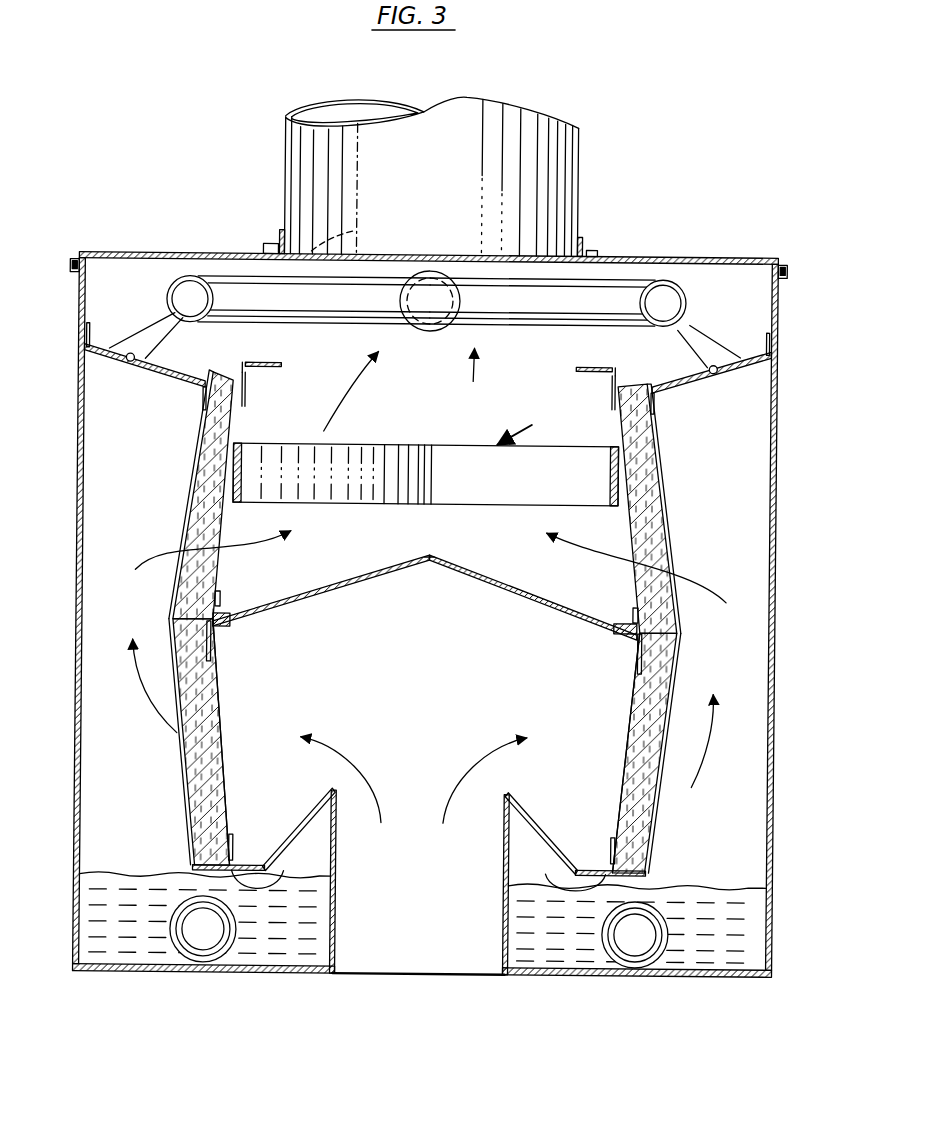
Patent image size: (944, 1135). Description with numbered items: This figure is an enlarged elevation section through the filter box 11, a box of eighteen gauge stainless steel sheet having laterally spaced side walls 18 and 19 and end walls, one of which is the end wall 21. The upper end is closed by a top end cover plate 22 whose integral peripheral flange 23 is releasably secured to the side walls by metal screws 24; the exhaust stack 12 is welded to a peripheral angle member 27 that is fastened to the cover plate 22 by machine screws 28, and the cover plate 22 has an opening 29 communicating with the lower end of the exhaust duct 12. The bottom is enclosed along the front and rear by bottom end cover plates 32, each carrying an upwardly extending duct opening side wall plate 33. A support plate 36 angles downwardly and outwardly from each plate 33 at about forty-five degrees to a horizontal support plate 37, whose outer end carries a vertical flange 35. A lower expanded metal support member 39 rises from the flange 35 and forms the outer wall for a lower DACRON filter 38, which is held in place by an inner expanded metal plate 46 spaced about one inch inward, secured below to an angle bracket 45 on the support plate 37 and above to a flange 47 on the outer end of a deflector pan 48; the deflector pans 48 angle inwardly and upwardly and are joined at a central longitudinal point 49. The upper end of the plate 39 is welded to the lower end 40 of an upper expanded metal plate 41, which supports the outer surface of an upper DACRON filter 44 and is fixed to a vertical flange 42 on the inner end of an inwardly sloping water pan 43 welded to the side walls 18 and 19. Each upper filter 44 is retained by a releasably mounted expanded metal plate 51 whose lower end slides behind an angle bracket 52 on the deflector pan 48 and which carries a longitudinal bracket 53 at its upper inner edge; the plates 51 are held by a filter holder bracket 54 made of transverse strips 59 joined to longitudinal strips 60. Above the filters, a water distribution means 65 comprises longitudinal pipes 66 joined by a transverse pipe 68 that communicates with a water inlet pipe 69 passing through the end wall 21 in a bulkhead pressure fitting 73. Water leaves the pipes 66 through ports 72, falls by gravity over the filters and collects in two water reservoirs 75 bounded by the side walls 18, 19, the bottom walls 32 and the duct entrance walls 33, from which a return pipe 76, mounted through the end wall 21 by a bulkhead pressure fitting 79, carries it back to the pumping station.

The filter box 11 is at (428, 602).
The exhaust stack 12 is at (540, 138).
The side wall 18 is at (772, 609).
The side wall 19 is at (78, 486).
The end wall 21 is at (428, 968).
The top end cover plate 22 is at (668, 258).
The integral peripheral flange 23 is at (70, 262).
The metal screws 24 is at (67, 276).
The peripheral angle member 27 is at (277, 234).
The machine screws 28 is at (260, 248).
The opening 29 is at (356, 232).
The bottom end cover plates 32 is at (298, 976).
The duct opening side wall plate 33 is at (340, 900).
The vertical longitudinal flange 35 is at (198, 866).
The support plate 36 is at (318, 810).
The horizontal support plate 37 is at (258, 892).
The lower filter 38 is at (220, 762).
The lower expanded metal support member 39 is at (190, 774).
The lower end of upper expanded metal plate 40 is at (176, 630).
The upper expanded metal plate 41 is at (198, 482).
The vertical flange 42 is at (204, 394).
The inwardly sloping water pan 43 is at (132, 366).
The upper filter 44 is at (192, 520).
The angle bracket 45 is at (236, 846).
The inner expanded metal plate 46 is at (216, 714).
The flange 47 is at (216, 652).
The deflector pan 48 is at (328, 594).
The central longitudinal point 49 is at (432, 556).
The releasably mounted expanded metal plate 51 is at (224, 524).
The angle bracket 52 is at (222, 612).
The longitudinal bracket 53 is at (252, 380).
The filter holder bracket 54 is at (532, 429).
The transverse metal strips 59 is at (466, 448).
The longitudinally disposed metal strip 60 is at (246, 490).
The water distribution means 65 is at (344, 326).
The longitudinal pipes 66 is at (170, 284).
The second transverse pipe 68 is at (533, 324).
The water inlet pipe 69 is at (460, 300).
The ports 72 is at (164, 308).
The bulkhead pressure fitting 73 is at (432, 328).
The water reservoirs 75 is at (130, 944).
The return pipe 76 is at (218, 958).
The bulkhead pressure fitting 79 is at (186, 902).